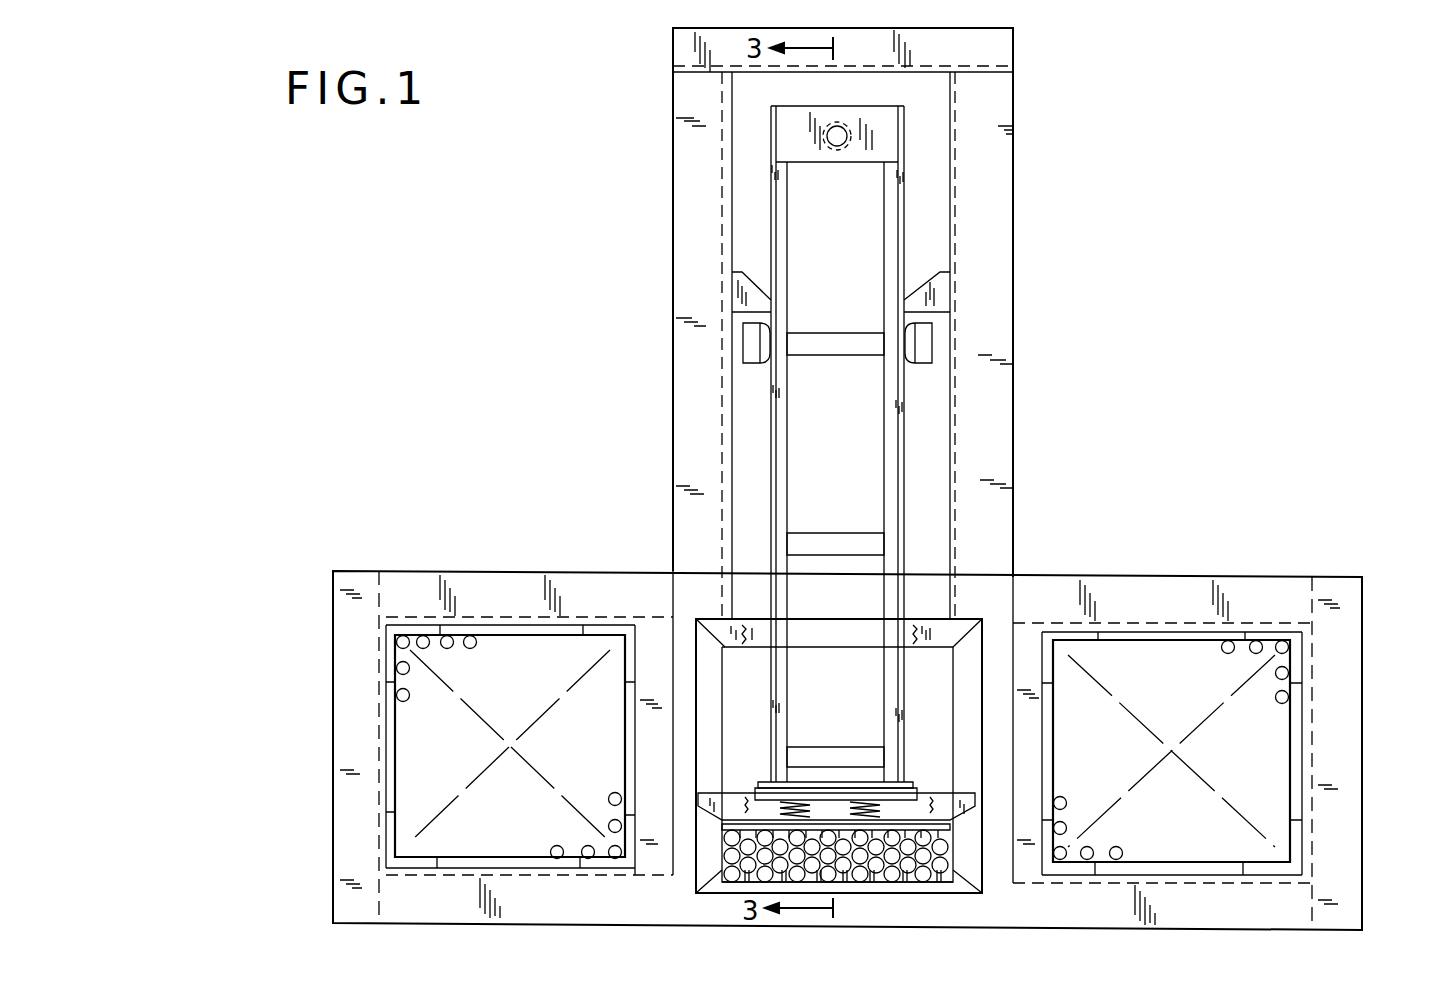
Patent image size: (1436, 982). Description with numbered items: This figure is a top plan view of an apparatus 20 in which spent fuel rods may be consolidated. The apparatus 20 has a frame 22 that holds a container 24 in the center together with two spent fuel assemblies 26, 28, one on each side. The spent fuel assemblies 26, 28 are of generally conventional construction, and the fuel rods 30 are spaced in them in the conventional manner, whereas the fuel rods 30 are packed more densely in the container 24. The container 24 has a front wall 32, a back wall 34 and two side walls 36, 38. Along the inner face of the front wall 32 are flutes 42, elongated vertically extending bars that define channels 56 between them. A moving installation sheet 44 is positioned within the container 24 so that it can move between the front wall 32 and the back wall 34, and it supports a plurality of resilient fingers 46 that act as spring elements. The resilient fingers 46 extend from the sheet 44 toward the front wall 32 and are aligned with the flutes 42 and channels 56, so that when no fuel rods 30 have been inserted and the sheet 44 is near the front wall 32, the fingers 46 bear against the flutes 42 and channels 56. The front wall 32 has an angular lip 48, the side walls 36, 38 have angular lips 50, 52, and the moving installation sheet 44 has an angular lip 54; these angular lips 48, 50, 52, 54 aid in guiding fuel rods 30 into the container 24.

The apparatus 20 is at (1032, 345).
The frame 22 is at (1003, 422).
The container 24 is at (982, 620).
The spent fuel assembly 26 is at (1300, 628).
The spent fuel assembly 28 is at (597, 632).
The fuel rods 30 is at (478, 648).
The front wall 32 is at (727, 885).
The back wall 34 is at (815, 610).
The side wall 36 is at (722, 668).
The side wall 38 is at (940, 684).
The flutes 42 is at (750, 866).
The moving installation sheet 44 is at (763, 822).
The resilient fingers 46 is at (828, 830).
The angular lip 48 is at (952, 872).
The angular lip 50 is at (715, 692).
The angular lip 52 is at (975, 710).
The angular lip 54 is at (718, 800).
The channels 56 is at (935, 877).